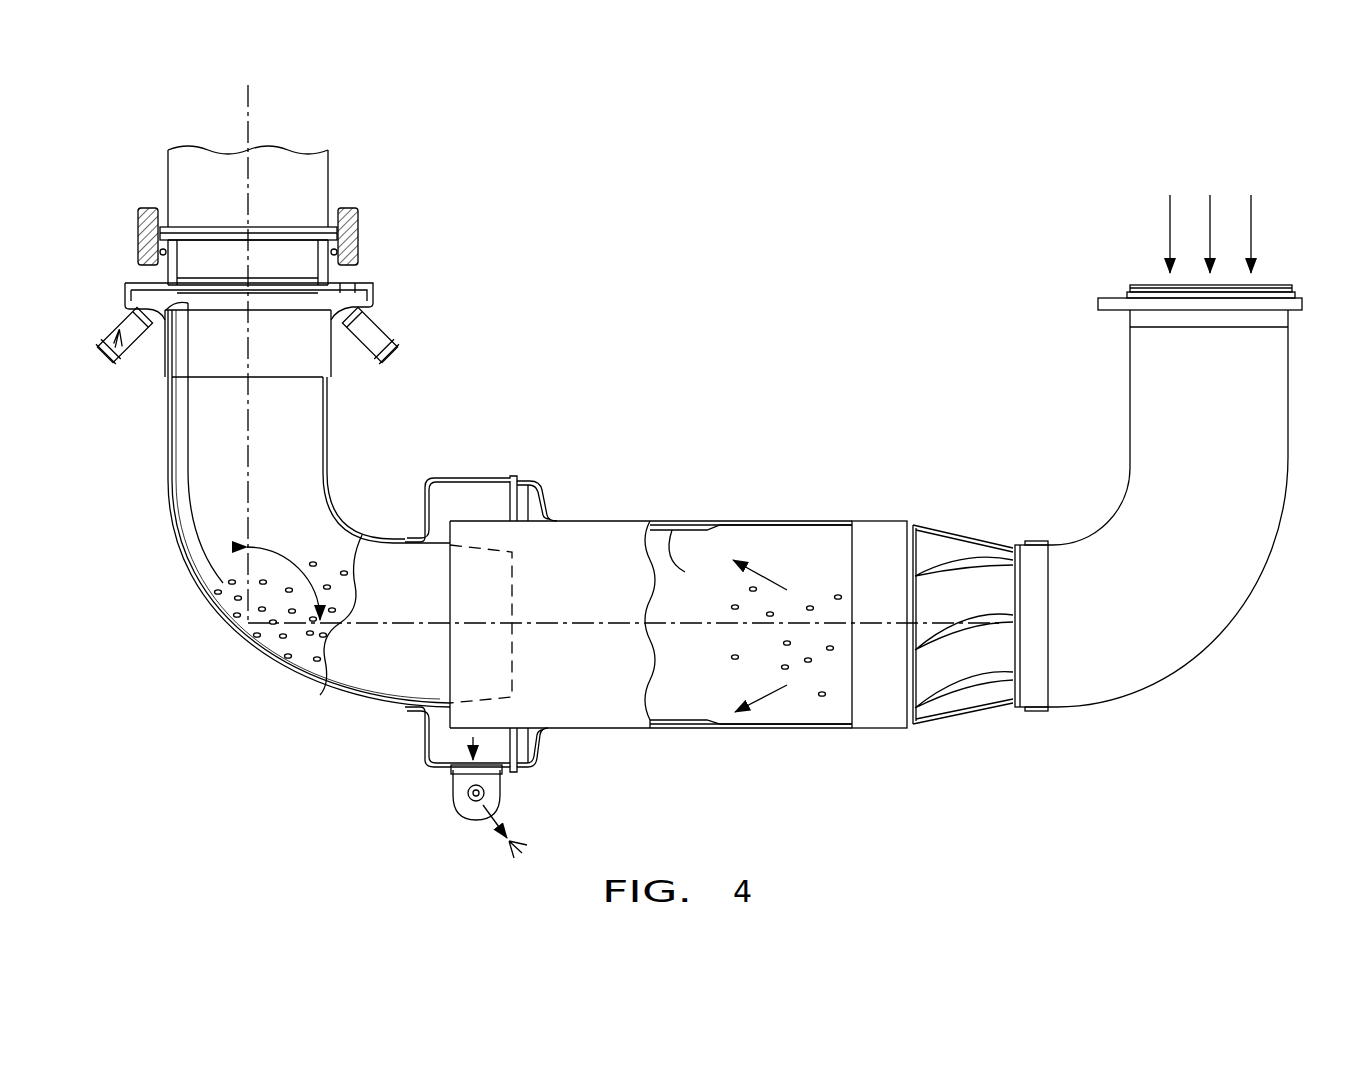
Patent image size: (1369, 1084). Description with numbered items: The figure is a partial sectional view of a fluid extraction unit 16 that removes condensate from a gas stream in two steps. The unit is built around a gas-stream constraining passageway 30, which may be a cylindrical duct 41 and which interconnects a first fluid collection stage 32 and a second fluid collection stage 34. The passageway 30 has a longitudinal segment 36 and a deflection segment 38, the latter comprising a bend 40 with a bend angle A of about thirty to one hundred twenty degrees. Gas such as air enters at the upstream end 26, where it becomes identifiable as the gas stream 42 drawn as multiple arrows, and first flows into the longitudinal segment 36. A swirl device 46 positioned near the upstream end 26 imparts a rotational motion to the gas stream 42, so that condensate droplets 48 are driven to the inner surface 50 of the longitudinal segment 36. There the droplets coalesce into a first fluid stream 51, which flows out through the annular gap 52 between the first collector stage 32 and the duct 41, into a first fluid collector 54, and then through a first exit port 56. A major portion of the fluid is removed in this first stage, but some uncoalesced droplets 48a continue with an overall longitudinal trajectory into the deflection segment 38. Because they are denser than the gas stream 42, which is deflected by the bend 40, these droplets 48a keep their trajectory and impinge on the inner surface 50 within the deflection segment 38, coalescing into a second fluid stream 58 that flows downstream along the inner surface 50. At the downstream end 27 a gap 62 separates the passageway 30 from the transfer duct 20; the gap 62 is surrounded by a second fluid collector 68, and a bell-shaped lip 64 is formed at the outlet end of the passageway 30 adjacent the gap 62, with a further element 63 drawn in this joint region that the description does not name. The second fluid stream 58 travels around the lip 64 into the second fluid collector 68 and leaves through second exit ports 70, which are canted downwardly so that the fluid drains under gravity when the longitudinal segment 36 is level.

The fluid extraction unit 16 is at (606, 470).
The transfer duct 20 is at (330, 167).
The upstream end 26 is at (1118, 312).
The downstream end 27 is at (372, 298).
The gas-stream constraining passageway 30 is at (708, 520).
The first fluid collection stage 32 is at (641, 519).
The second fluid collection stage 34 is at (165, 488).
The longitudinal segment 36 is at (620, 730).
The deflection segment 38 is at (187, 550).
The bend 40 is at (222, 617).
The cylindrical duct 41 is at (290, 682).
The gas stream 42 is at (1170, 226).
The swirl device 46 is at (960, 690).
The droplets 48 is at (838, 594).
The uncoalesced droplets 48a is at (283, 640).
The inner surface 50 is at (822, 717).
The first fluid stream 51 is at (510, 838).
The annular gap 52 is at (478, 532).
The first fluid collector 54 is at (423, 742).
The first exit port 56 is at (457, 783).
The second fluid stream 58 is at (192, 454).
The gap 62 is at (230, 300).
The seal ring 63 is at (258, 300).
The bell-shaped lip 64 is at (345, 290).
The second fluid collector 68 is at (112, 282).
The second exit ports 70 is at (392, 348).
The bend angle A is at (298, 560).